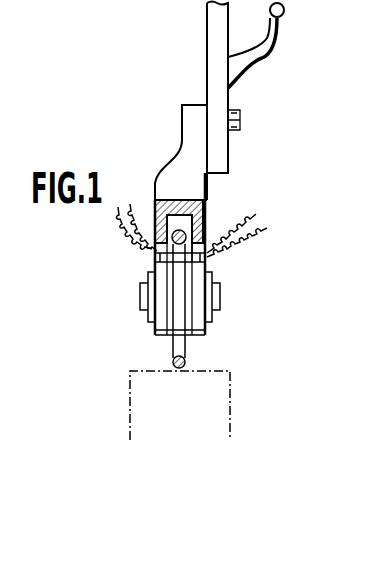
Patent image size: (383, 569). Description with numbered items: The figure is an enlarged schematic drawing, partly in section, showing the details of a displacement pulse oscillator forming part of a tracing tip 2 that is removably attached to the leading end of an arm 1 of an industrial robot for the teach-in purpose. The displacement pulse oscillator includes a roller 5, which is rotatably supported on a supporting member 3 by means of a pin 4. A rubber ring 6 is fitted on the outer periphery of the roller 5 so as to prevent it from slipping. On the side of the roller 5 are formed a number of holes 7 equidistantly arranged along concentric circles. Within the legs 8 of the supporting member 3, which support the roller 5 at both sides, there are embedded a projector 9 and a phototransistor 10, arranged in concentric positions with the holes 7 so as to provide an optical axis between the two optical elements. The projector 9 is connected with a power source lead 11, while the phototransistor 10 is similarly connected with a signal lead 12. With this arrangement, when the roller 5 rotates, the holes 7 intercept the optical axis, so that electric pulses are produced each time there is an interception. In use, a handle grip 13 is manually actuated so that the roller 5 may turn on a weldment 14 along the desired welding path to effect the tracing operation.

The arm 1 is at (207, 26).
The tracing tip 2 is at (145, 106).
The supporting member 3 is at (182, 129).
The pin 4 is at (218, 287).
The roller 5 is at (186, 355).
The rubber ring 6 is at (173, 364).
The holes 7 is at (205, 225).
The legs 8 is at (150, 333).
The projector 9 is at (155, 259).
The phototransistor 10 is at (207, 259).
The power source lead 11 is at (126, 240).
The signal lead 12 is at (126, 240).
The handle grip 13 is at (277, 40).
The weldment 14 is at (231, 412).